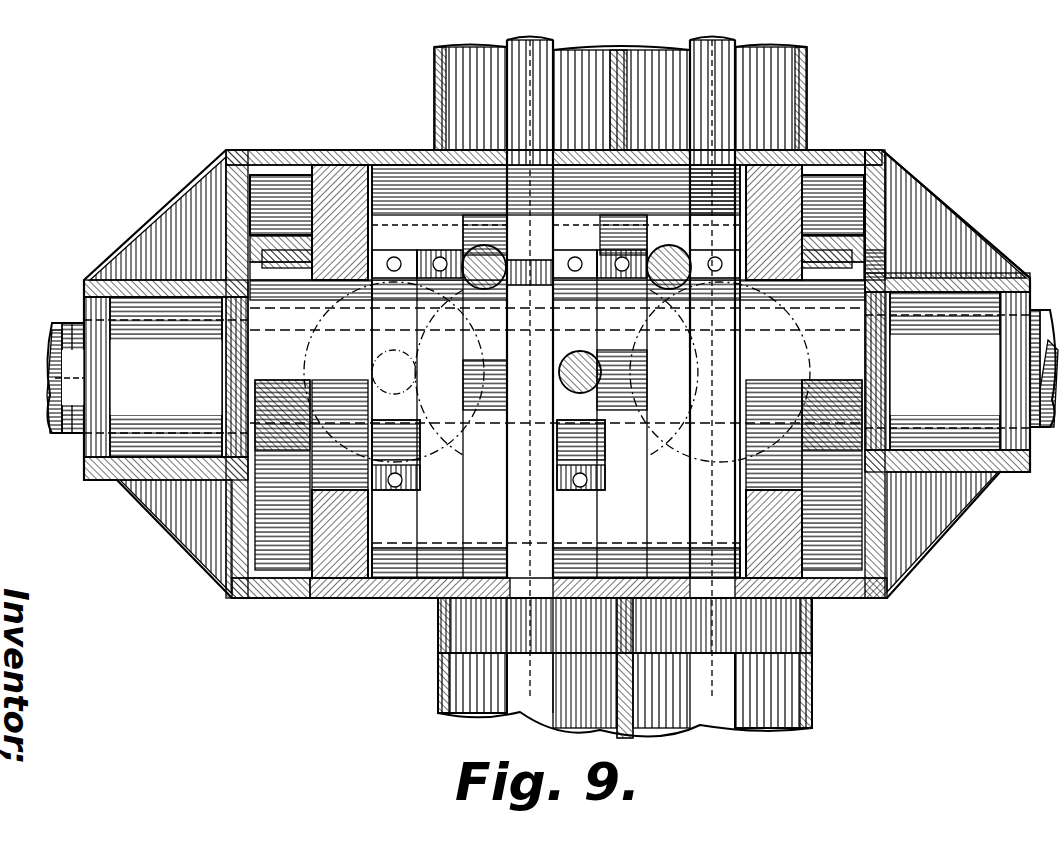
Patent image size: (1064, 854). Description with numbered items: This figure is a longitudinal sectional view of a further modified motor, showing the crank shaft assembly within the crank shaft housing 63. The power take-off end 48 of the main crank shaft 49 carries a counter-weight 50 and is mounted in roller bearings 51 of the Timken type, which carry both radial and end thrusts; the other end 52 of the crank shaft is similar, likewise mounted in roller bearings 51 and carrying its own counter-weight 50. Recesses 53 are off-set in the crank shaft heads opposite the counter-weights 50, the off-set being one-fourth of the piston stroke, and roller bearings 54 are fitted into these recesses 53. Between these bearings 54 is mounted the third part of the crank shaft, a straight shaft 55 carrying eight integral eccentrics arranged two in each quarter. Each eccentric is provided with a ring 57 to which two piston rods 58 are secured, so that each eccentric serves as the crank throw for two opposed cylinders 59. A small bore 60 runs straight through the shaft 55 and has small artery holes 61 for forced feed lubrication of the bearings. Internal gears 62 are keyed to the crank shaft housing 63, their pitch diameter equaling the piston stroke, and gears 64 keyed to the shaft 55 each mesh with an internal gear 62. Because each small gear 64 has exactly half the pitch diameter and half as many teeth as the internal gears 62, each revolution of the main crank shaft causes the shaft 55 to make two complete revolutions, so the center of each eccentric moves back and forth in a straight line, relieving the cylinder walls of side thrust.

The power take-off end 48 is at (1046, 340).
The main crank shaft 49 is at (983, 282).
The counter-weight 50 is at (238, 599).
The roller bearings 51 is at (232, 450).
The other end of the crank shaft 52 is at (52, 345).
The recesses 53 is at (265, 262).
The roller bearings 54 is at (250, 373).
The straight shaft 55 is at (895, 280).
The ring 57 is at (710, 200).
The piston rods 58 is at (537, 115).
The cylinders 59 is at (467, 95).
The small bore 60 is at (557, 384).
The artery holes 61 is at (370, 254).
The internal gears 62 is at (328, 180).
The crank shaft housing 63 is at (864, 152).
The gears 64 is at (306, 270).